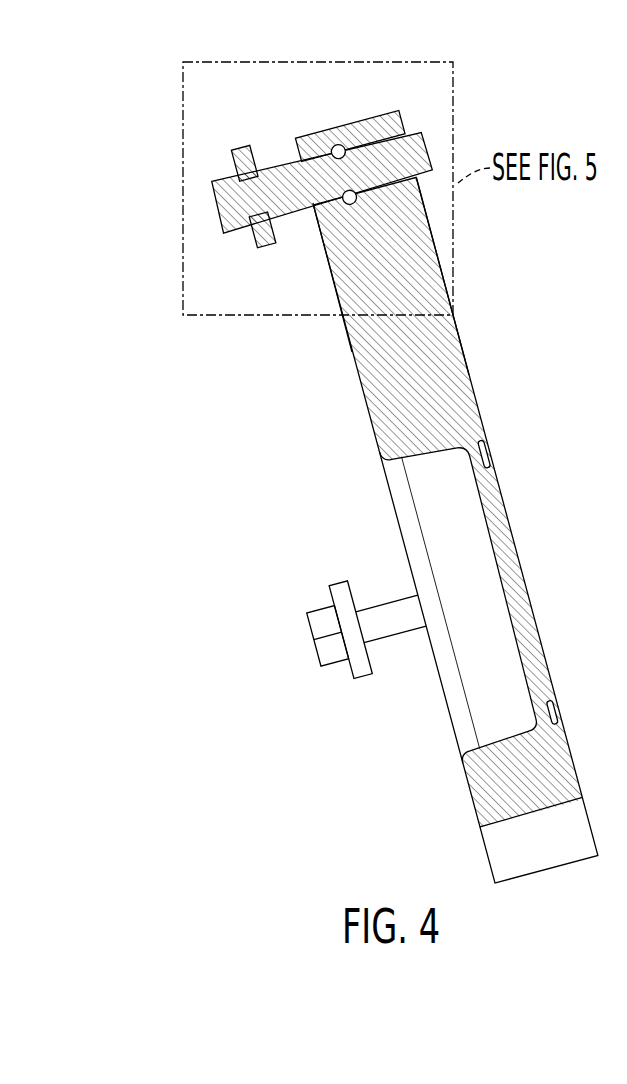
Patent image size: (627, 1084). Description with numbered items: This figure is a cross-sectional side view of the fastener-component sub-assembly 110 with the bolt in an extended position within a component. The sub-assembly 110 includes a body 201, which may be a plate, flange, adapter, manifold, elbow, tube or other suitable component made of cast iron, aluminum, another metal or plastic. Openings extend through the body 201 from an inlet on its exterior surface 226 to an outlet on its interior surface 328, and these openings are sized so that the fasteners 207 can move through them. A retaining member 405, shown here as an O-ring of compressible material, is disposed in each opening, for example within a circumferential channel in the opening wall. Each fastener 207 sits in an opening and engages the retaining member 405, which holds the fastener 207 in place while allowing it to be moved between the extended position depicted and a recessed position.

The fastener-component sub-assembly 110 is at (121, 135).
The body 201 is at (378, 398).
The fastener 207 is at (218, 219).
The exterior surface 226 is at (352, 352).
The interior surface 328 is at (470, 375).
The retaining member 405 is at (336, 144).